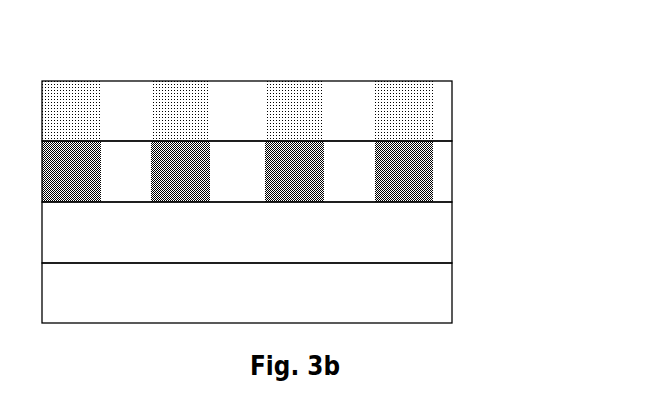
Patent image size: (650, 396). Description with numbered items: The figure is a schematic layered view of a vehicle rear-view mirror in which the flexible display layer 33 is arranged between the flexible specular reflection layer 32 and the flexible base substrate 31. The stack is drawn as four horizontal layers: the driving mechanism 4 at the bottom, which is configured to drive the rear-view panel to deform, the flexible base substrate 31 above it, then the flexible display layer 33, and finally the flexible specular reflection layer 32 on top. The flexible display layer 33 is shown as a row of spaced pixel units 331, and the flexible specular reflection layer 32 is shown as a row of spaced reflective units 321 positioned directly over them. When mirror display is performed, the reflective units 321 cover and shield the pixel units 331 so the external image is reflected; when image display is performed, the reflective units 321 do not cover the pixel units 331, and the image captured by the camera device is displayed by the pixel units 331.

The driving mechanism 4 is at (452, 294).
The flexible base substrate 31 is at (452, 233).
The flexible specular reflection layer 32 is at (294, 78).
The reflective units 321 is at (73, 94).
The flexible display layer 33 is at (294, 111).
The pixel units 331 is at (293, 157).